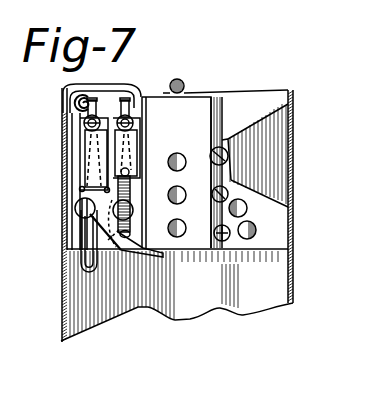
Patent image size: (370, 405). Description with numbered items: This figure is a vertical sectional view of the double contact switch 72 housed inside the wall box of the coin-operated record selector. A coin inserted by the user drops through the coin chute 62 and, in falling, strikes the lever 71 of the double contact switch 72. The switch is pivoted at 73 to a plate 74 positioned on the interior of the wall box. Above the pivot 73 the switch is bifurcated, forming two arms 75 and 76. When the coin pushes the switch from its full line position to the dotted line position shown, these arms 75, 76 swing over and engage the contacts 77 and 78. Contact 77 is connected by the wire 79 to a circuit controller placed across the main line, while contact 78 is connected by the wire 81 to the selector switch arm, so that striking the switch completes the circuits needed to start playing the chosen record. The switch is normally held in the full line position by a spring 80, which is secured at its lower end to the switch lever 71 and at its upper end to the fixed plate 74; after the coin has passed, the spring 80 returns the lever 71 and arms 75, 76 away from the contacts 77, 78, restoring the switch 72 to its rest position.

The coin chute 62 is at (200, 150).
The lever 71 is at (153, 262).
The double contact switch 72 is at (76, 203).
The pivot 73 is at (84, 222).
The plate 74 is at (72, 246).
The arm 75 is at (74, 143).
The arm 76 is at (107, 147).
The contact 77 is at (84, 124).
The contact 78 is at (134, 124).
The wire 79 is at (64, 105).
The spring 80 is at (129, 192).
The wire 81 is at (118, 84).